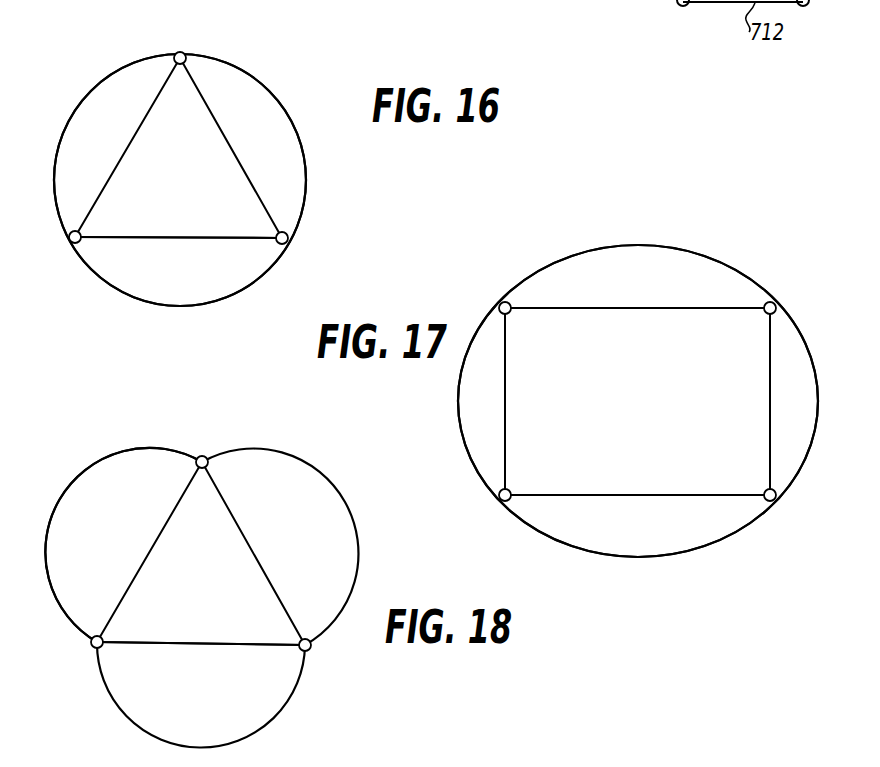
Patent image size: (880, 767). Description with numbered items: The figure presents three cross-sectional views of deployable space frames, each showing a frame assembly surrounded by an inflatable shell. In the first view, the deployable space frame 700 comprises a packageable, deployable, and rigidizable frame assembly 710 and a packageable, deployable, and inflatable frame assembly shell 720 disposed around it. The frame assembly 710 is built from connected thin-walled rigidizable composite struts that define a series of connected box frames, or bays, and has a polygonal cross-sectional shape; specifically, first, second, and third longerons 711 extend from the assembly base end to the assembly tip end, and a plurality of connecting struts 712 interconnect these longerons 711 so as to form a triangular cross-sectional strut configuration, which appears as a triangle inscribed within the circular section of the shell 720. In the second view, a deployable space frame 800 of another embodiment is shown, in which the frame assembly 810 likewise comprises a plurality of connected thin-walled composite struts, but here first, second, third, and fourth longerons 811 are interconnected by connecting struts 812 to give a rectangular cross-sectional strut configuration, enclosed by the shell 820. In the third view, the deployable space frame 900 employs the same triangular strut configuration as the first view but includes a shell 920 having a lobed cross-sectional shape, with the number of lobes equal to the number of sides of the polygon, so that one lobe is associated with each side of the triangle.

In FIG. 16, the deployable space frame 700 is at (258, 62).
In FIG. 16, the frame assembly 710 is at (248, 149).
In FIG. 18, the frame assembly 710 is at (290, 500).
In FIG. 16, the longerons 711 is at (289, 239).
In FIG. 18, the longerons 711 is at (310, 647).
In FIG. 16, the connecting struts 712 is at (191, 237).
In FIG. 18, the connecting struts 712 is at (246, 648).
In FIG. 16, the frame assembly shell 720 is at (308, 183).
In FIG. 17, the deployable space frame 800 is at (824, 238).
In FIG. 17, the frame assembly 810 is at (700, 296).
In FIG. 17, the longerons 811 is at (767, 311).
In FIG. 17, the connecting struts 812 is at (685, 477).
In FIG. 17, the shell 820 is at (560, 263).
In FIG. 18, the deployable space frame 900 is at (368, 530).
In FIG. 18, the shell 920 is at (70, 487).